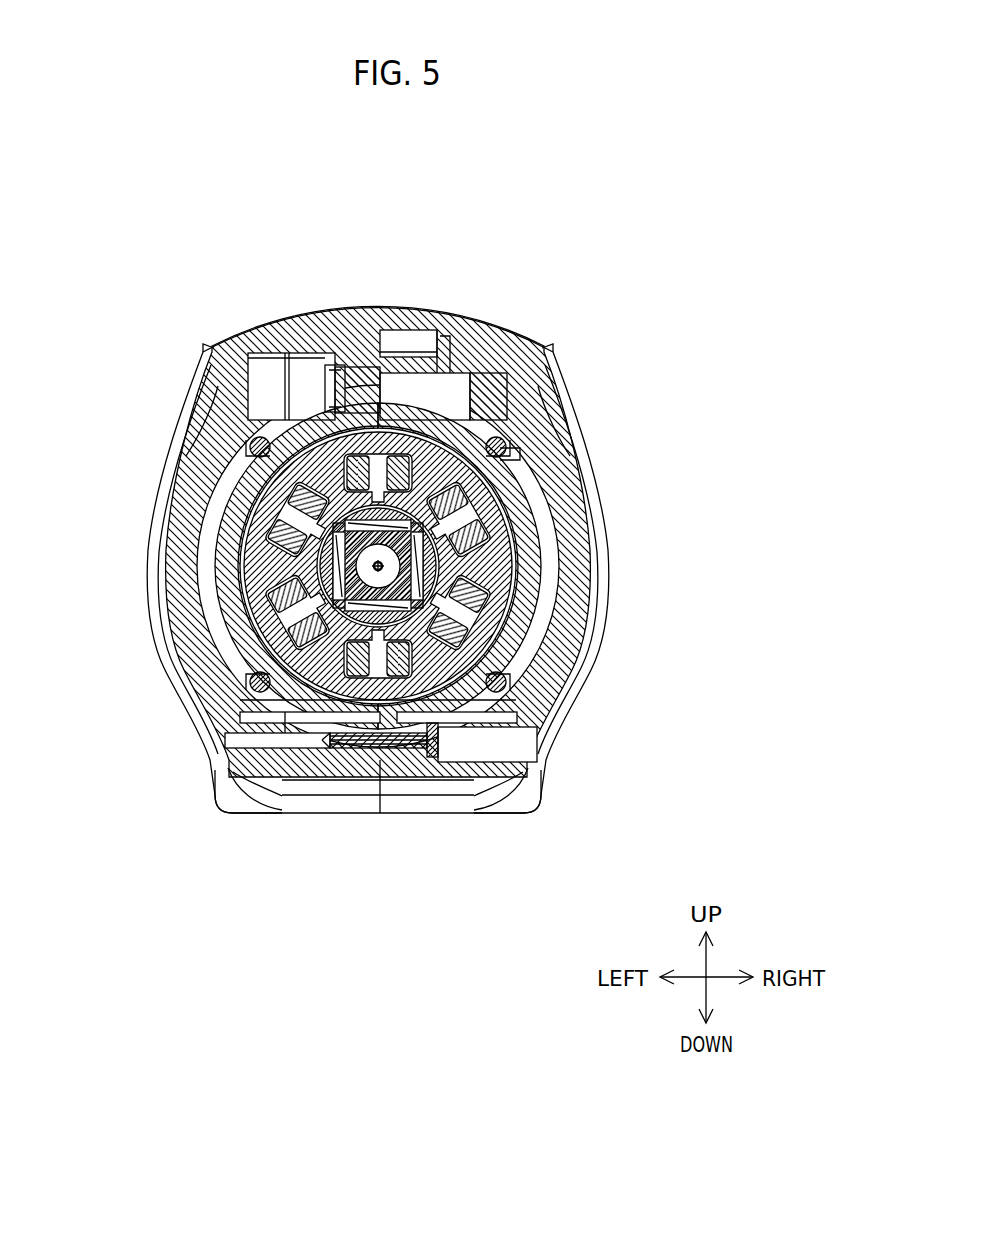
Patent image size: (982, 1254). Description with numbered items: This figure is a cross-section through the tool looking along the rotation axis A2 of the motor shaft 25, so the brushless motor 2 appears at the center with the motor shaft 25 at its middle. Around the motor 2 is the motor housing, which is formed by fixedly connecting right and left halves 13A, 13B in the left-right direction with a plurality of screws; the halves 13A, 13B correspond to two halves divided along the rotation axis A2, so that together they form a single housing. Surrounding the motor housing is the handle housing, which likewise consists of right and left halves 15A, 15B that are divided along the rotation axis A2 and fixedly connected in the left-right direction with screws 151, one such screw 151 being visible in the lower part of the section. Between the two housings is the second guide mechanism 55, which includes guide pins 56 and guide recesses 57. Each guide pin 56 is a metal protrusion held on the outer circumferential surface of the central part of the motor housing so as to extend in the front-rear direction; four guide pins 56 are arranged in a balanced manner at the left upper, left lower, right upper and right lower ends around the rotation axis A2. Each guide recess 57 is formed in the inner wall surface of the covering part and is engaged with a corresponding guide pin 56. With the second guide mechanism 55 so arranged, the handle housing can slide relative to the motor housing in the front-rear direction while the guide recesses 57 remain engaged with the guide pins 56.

The left half of handle housing 15A is at (282, 315).
The right half of handle housing 15B is at (447, 314).
The guide pin 56 is at (257, 443).
The second guide mechanism 55 is at (523, 446).
The guide recess 57 is at (250, 451).
The left half of motor housing 13A is at (233, 525).
The right half of motor housing 13B is at (520, 522).
The motor 2 is at (238, 571).
The motor shaft 25 is at (392, 566).
The rotation axis A2 is at (515, 583).
The screw 151 is at (398, 748).